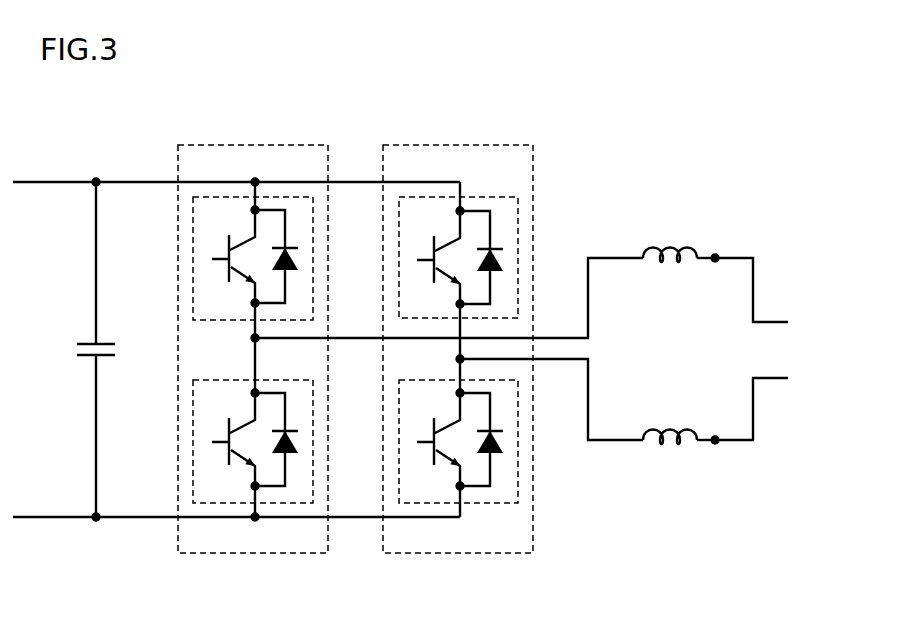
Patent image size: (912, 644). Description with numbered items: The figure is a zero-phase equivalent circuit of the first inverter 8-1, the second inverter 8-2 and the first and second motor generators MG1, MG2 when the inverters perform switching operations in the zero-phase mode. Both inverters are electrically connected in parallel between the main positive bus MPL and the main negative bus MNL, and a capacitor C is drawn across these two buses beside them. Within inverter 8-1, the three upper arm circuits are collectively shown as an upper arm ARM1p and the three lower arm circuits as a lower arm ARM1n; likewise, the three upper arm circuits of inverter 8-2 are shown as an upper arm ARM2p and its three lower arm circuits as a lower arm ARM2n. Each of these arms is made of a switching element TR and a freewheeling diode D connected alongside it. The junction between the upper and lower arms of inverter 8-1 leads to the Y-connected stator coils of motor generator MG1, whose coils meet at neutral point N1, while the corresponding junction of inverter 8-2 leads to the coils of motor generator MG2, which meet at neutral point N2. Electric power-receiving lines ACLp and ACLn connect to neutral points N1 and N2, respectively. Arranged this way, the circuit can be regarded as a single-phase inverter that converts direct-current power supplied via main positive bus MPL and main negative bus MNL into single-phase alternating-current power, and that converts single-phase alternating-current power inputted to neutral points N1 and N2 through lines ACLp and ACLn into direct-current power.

The main positive bus MPL is at (52, 182).
The main negative bus MNL is at (52, 520).
The capacitor C is at (103, 342).
The first inverter 8-1 is at (210, 145).
The second inverter 8-2 is at (425, 143).
The upper arm ARM1p is at (272, 197).
The lower arm ARM1n is at (217, 503).
The upper arm ARM2p is at (502, 197).
The lower arm ARM2n is at (485, 503).
The switching element TR is at (227, 265).
The freewheeling diode D is at (267, 256).
The first motor generator MG1 is at (678, 233).
The second motor generator MG2 is at (679, 457).
The neutral point N1 is at (717, 256).
The neutral point N2 is at (717, 442).
The electric power-receiving line ACLp is at (753, 282).
The electric power-receiving line ACLn is at (753, 418).